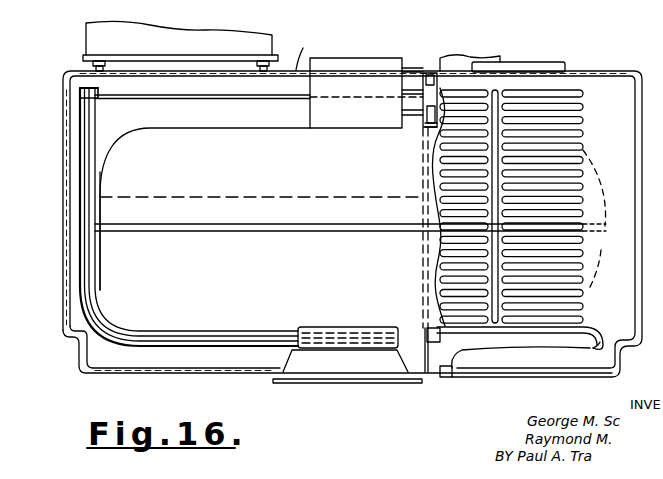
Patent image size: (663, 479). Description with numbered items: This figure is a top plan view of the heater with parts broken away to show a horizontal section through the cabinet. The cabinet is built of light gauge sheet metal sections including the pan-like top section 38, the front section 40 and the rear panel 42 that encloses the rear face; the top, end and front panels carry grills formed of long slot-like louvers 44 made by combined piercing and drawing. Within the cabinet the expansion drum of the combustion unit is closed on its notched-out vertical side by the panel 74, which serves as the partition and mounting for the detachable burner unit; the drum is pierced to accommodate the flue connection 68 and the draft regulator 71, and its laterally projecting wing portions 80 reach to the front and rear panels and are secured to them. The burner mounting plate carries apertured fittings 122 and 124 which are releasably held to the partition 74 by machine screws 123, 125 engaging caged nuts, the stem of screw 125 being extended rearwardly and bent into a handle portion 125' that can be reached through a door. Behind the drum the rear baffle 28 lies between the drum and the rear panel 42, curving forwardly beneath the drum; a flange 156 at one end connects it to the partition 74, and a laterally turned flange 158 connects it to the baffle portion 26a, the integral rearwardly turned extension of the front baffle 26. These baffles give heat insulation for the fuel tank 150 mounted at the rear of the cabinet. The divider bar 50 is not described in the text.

The front baffle 26 is at (140, 348).
The baffle portion 26a is at (82, 195).
The rear baffle 28 is at (236, 99).
The top section 38 is at (618, 246).
The front section 40 is at (200, 378).
The rear panel 42 is at (311, 53).
The louvers 44 is at (533, 133).
The fin divider bar 50 is at (493, 92).
The flue connection 68 is at (340, 68).
The draft regulator 71 is at (567, 62).
The panel 74 is at (428, 283).
The wing portions 80 is at (425, 78).
The apertured fitting 122 is at (423, 343).
The machine screw 123 is at (432, 128).
The apertured fitting 124 is at (427, 114).
The machine screw 125 is at (520, 347).
The handle portion 125' is at (574, 354).
The fuel tank 150 is at (152, 50).
The flange 156 is at (425, 93).
The laterally turned flange 158 is at (100, 93).